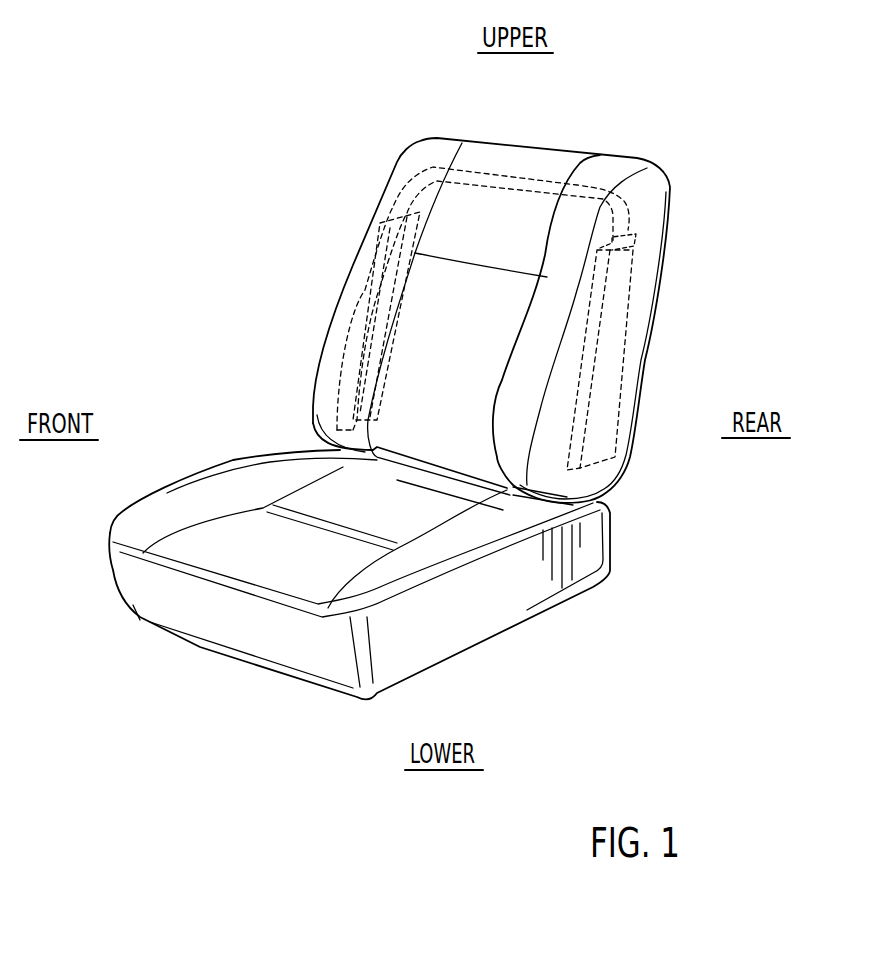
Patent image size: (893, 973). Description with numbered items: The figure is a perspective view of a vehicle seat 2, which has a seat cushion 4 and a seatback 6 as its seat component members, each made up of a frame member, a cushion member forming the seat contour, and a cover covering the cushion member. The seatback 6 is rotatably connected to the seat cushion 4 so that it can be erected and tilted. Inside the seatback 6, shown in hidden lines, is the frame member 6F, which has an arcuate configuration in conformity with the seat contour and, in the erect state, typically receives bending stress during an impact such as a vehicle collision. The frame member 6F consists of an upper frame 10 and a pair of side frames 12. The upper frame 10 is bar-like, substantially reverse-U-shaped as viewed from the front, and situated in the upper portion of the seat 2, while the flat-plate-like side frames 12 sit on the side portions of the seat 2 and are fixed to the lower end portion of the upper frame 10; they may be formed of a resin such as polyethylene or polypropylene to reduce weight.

The vehicle seat 2 is at (622, 114).
The seat cushion 4 is at (282, 450).
The seatback 6 is at (367, 247).
The frame member 6F is at (745, 219).
The upper frame 10 is at (627, 219).
The side frames 12 is at (367, 302).